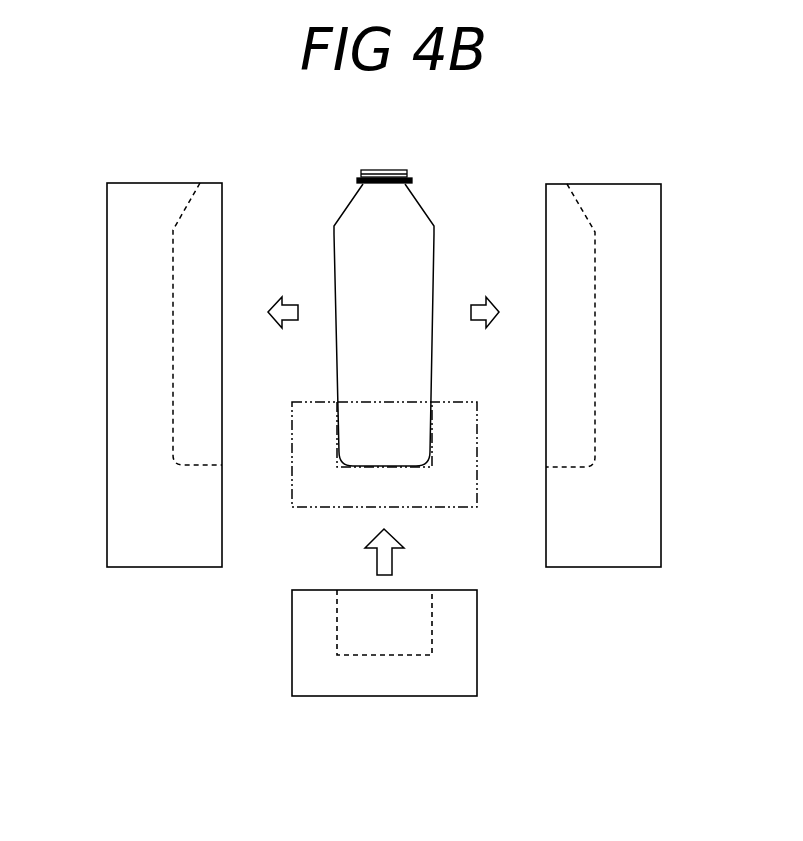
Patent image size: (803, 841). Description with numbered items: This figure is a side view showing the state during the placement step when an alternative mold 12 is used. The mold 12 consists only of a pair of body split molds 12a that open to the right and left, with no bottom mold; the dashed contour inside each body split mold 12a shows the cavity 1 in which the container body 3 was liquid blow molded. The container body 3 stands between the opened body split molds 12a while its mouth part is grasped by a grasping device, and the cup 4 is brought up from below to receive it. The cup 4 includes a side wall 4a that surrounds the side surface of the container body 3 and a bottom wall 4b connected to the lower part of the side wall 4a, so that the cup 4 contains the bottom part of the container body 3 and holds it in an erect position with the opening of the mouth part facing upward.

The cavity 1 is at (180, 374).
The container body 3 is at (372, 168).
The cup 4 is at (477, 487).
The side wall 4a is at (463, 452).
The bottom wall 4b is at (420, 490).
The mold 12 is at (641, 183).
The body split mold 12a is at (120, 344).